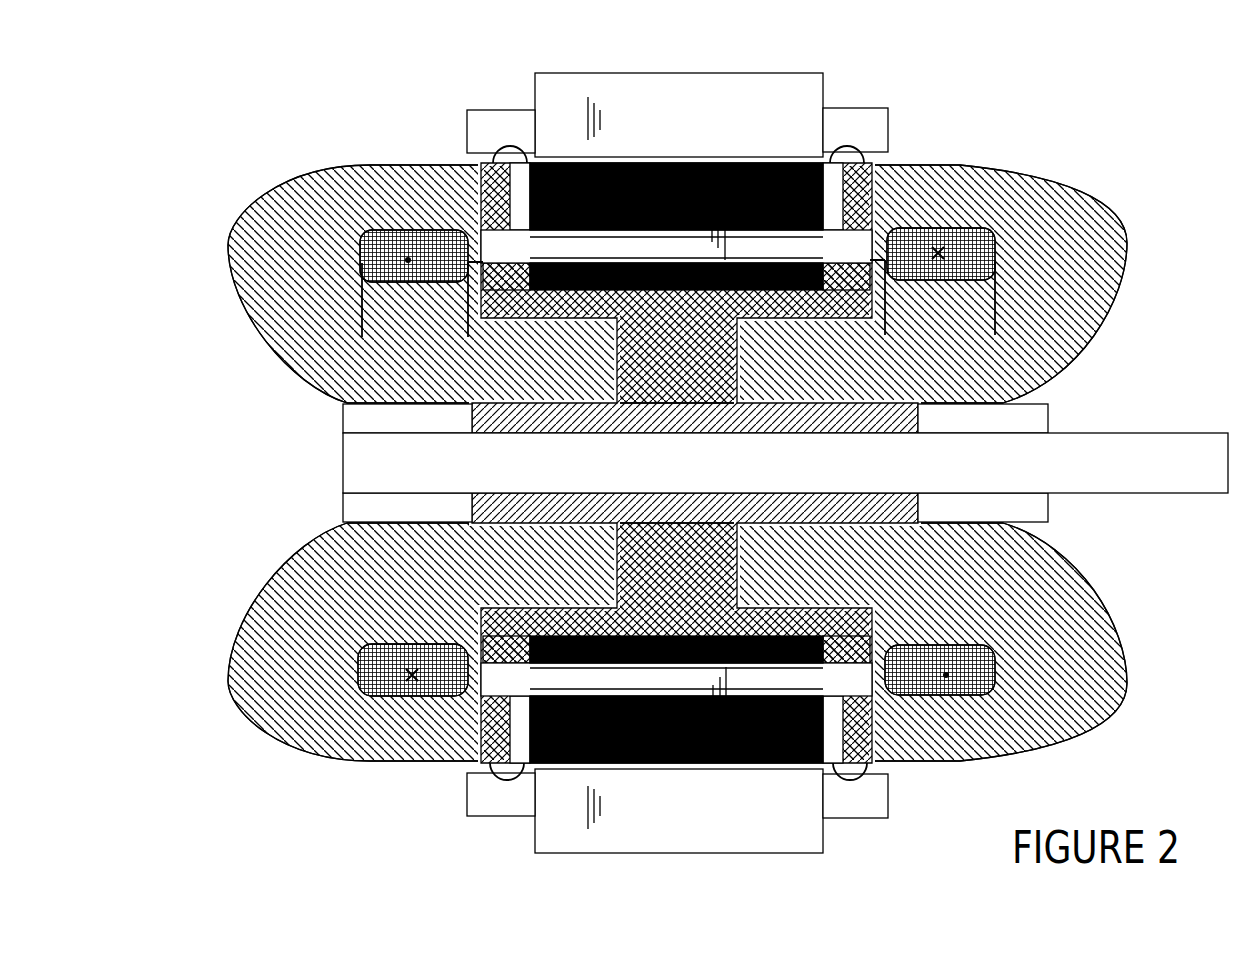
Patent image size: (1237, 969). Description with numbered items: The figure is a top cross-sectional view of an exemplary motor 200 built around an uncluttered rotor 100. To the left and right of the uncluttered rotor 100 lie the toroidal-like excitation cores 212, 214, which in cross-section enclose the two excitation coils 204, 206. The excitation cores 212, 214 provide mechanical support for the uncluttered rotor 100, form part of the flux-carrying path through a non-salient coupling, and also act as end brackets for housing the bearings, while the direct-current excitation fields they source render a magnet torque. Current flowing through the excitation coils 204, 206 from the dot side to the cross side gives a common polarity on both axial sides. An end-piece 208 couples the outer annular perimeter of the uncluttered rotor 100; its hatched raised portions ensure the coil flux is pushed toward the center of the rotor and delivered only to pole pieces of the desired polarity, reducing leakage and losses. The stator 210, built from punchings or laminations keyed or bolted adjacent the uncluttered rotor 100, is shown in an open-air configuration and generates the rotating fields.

The uncluttered rotor 100 is at (823, 182).
The motor 200 is at (1141, 96).
The excitation coil 204 is at (358, 233).
The excitation coil 206 is at (988, 242).
The end-piece 208 is at (522, 162).
The stator 210 is at (633, 95).
The excitation core 212 is at (405, 378).
The excitation core 214 is at (910, 368).